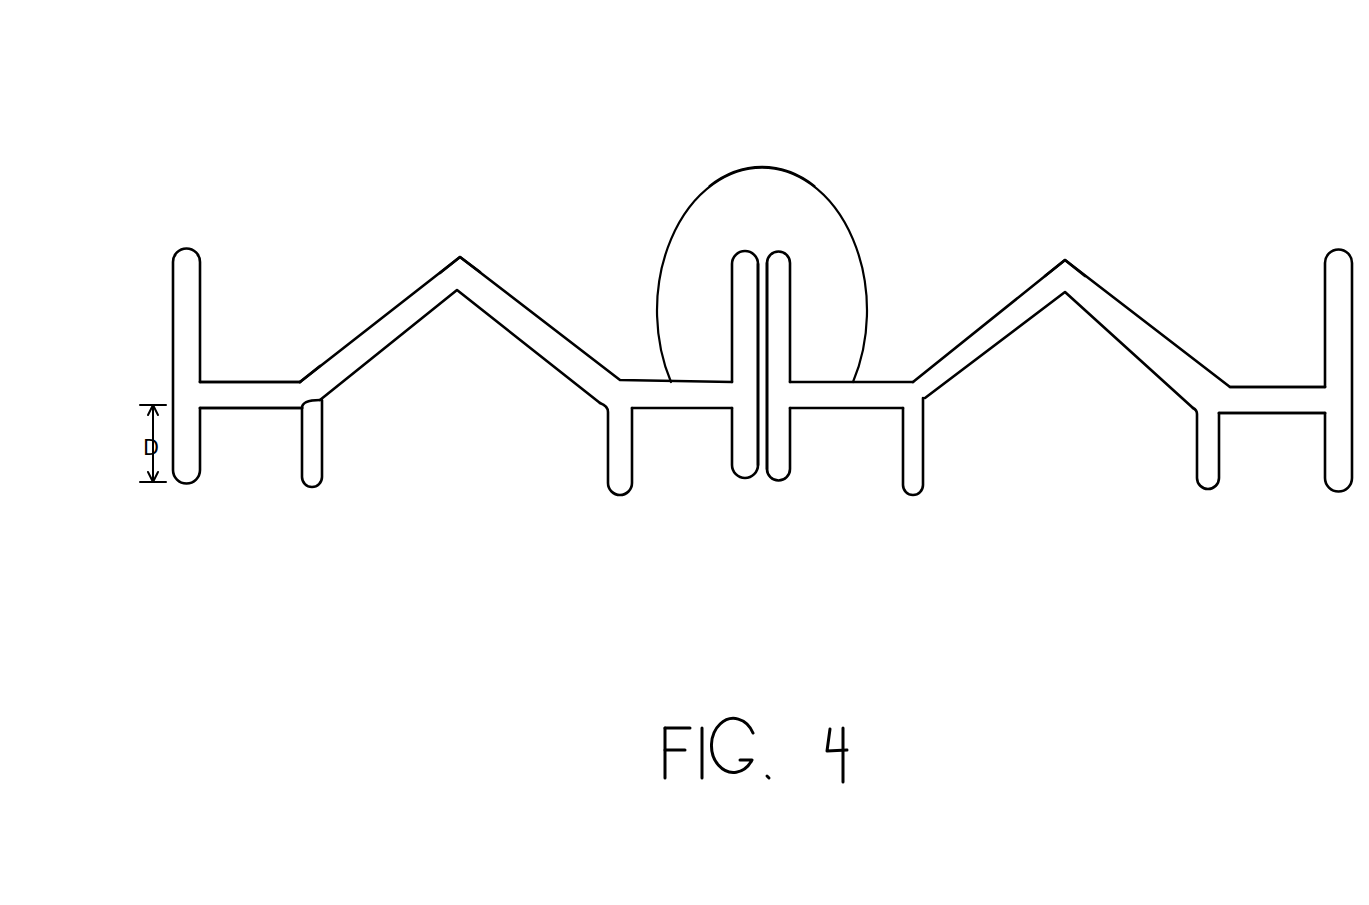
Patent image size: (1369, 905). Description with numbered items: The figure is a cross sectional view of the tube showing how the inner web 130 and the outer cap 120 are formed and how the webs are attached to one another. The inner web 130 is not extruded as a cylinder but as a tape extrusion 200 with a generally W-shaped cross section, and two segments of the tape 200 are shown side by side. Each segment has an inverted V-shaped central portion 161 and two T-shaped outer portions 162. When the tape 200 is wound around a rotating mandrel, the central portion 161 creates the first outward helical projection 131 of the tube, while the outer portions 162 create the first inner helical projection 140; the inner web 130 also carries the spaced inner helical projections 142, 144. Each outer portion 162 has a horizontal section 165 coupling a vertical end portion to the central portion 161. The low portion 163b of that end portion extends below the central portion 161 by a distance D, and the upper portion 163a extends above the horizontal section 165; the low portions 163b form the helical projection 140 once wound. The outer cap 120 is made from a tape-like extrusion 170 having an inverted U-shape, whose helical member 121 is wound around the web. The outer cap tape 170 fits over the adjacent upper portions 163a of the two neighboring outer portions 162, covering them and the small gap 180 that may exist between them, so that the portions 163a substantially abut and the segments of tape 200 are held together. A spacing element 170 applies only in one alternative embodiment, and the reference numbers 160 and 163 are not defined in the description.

The outer cap 120 is at (832, 240).
The helical member 121 is at (777, 165).
The inner web 130 is at (518, 322).
The first helical projection 131 is at (433, 278).
The helical projection 140 is at (188, 492).
The helical projection 142 is at (323, 480).
The helical projection 144 is at (607, 477).
The rack module 160 is at (348, 523).
The central portion 161 is at (597, 433).
The outer portions 162 is at (307, 325).
The web 163 is at (793, 450).
The upper portion 163a is at (200, 350).
The low portion 163b is at (205, 458).
The horizontal section 165 is at (267, 395).
The outer cap tape 170 is at (938, 233).
The gap 180 is at (765, 260).
The tape extrusion 200 is at (1143, 548).